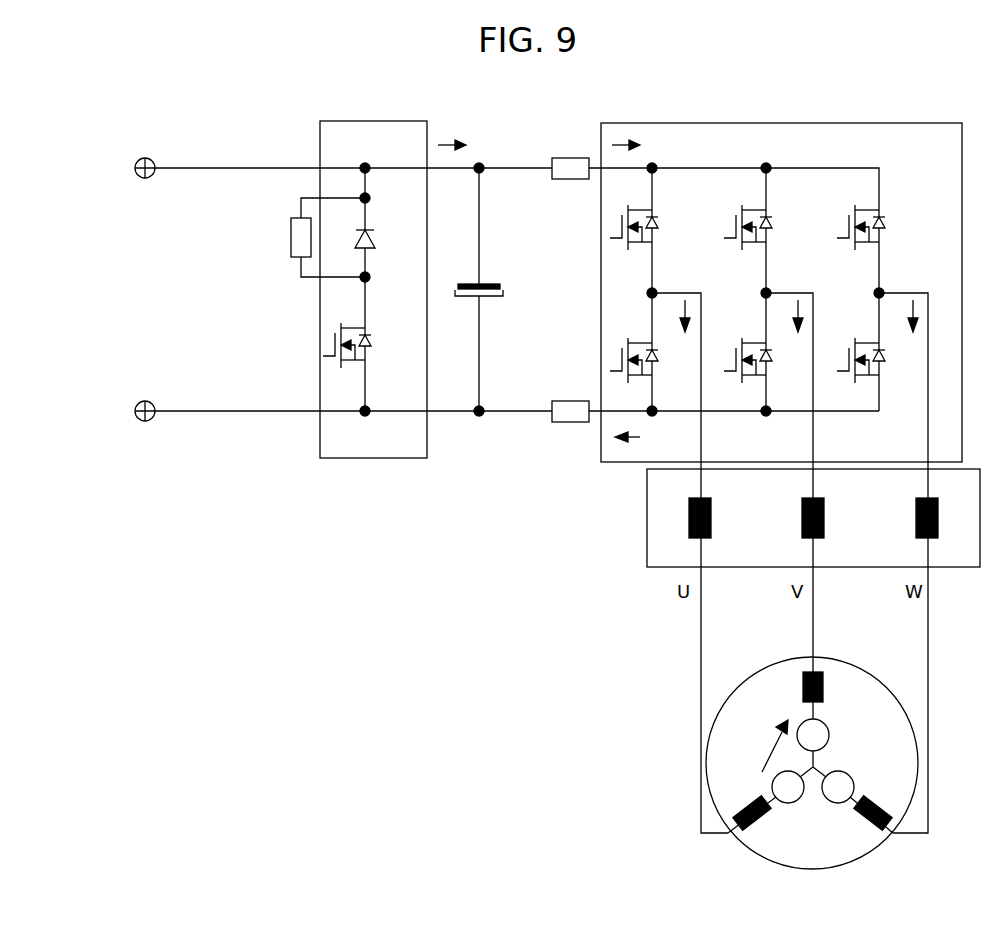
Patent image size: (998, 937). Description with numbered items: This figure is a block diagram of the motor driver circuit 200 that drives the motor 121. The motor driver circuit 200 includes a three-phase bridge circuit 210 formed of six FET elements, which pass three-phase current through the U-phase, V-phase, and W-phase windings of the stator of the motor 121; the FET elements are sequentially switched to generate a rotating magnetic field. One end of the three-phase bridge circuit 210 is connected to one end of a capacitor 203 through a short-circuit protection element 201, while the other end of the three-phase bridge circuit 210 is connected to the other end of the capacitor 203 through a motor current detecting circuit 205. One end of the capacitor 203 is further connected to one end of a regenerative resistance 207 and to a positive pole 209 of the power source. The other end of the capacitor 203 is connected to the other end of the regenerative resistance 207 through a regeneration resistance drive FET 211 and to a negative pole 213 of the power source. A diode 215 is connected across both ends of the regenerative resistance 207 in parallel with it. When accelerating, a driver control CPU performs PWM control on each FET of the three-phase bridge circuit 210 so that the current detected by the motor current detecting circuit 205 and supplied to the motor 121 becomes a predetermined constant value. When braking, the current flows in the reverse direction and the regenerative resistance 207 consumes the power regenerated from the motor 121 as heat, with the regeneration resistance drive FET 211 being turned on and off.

The motor driver circuit 200 is at (605, 96).
The positive pole 209 is at (145, 157).
The negative pole 213 is at (145, 421).
The regenerative resistance 207 is at (291, 238).
The diode 215 is at (372, 238).
The regeneration resistance drive FET 211 is at (352, 366).
The capacitor 203 is at (497, 298).
The short-circuit protection element 201 is at (570, 182).
The motor current detecting circuit 205 is at (570, 398).
The three-phase bridge circuit 210 is at (750, 123).
The motor 121 is at (812, 872).